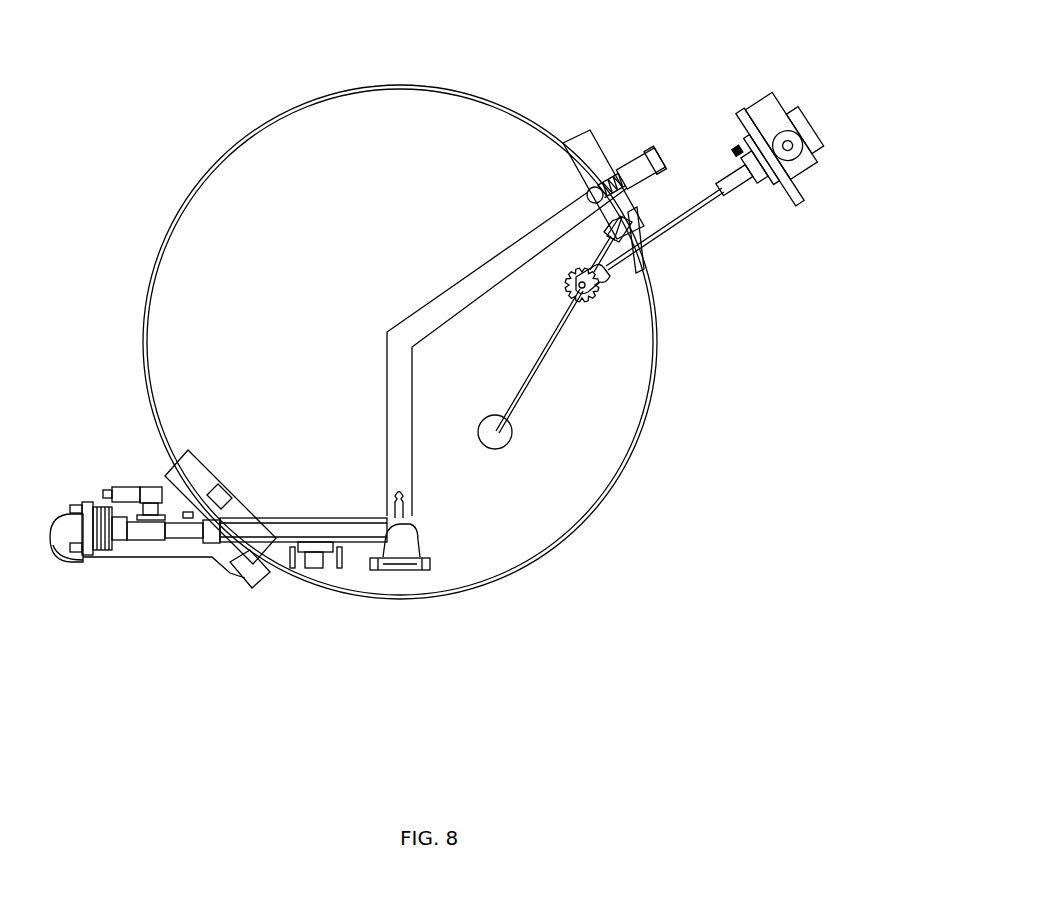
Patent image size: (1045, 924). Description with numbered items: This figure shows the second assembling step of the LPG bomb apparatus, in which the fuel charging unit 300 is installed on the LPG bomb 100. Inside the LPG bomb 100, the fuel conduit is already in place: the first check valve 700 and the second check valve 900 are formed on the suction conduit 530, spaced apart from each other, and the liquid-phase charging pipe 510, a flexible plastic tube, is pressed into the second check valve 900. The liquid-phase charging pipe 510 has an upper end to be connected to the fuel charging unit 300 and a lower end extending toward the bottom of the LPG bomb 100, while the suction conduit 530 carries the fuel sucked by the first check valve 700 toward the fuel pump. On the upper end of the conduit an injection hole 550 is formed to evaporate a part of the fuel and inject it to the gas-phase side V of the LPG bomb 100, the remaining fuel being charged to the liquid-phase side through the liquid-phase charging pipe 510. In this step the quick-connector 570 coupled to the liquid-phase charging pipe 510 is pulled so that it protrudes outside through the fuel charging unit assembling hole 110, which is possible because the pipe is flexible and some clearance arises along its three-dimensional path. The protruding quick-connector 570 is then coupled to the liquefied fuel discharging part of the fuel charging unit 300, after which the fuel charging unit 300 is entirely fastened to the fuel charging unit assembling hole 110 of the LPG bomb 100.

The LPG bomb 100 is at (156, 253).
The gas-phase side V is at (298, 158).
The fuel charging unit assembling hole 110 is at (588, 128).
The quick-connector 570 is at (640, 148).
The fuel charging unit 300 is at (771, 112).
The injection hole 550 is at (752, 187).
The liquid-phase charging pipe 510 is at (403, 442).
The suction conduit 530 is at (406, 520).
The first check valve 700 is at (400, 575).
The second check valve 900 is at (305, 572).